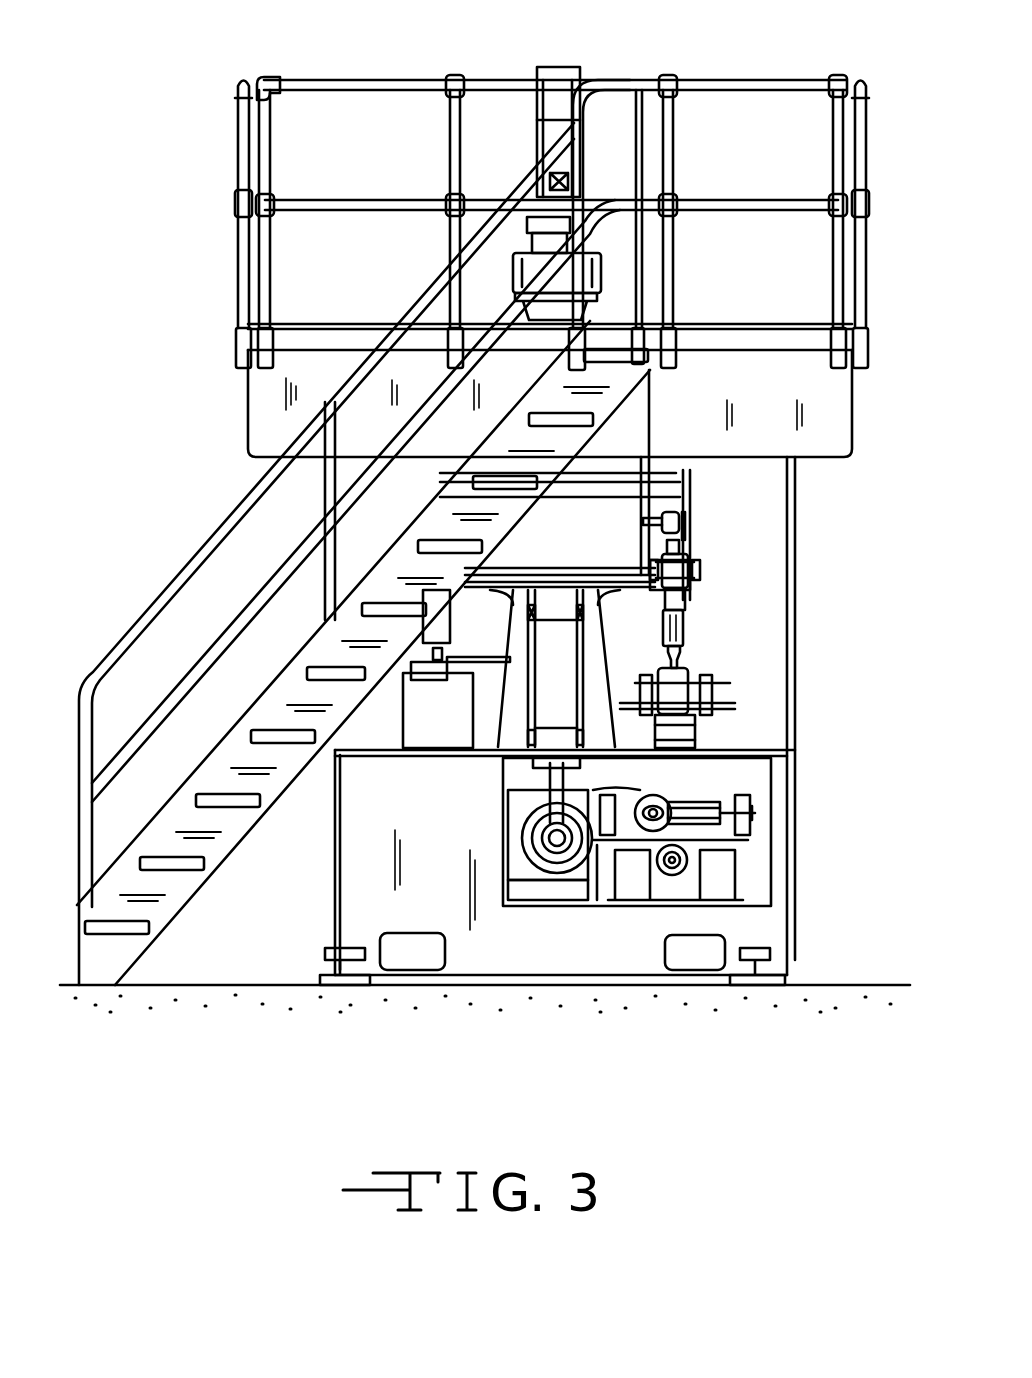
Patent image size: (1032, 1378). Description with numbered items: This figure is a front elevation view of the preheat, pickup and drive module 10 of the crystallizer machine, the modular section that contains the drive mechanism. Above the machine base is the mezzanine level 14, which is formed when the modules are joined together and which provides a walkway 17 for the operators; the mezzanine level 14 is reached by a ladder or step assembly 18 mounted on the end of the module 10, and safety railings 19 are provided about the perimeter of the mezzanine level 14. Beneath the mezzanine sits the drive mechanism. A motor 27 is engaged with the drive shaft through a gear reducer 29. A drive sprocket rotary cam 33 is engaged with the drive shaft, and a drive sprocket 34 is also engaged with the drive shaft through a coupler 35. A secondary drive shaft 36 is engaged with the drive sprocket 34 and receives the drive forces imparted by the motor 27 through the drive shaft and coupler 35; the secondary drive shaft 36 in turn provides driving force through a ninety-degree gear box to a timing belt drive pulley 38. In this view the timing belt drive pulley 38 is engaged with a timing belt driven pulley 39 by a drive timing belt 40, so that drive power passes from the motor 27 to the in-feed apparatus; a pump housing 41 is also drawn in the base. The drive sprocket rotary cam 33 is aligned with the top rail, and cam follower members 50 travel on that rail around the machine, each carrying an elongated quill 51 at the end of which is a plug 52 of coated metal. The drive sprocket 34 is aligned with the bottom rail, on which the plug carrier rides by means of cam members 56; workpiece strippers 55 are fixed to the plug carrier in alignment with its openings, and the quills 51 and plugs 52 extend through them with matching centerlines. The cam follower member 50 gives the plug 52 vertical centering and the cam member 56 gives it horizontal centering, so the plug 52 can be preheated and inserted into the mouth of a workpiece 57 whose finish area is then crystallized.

The preheat, pickup and drive module 10 is at (795, 913).
The mezzanine level 14 is at (830, 407).
The walkway 17 is at (752, 324).
The ladder or step assembly 18 is at (99, 968).
The safety railings 19 is at (865, 268).
The motor 27 is at (582, 73).
The gear reducer 29 is at (604, 267).
The drive sprocket rotary cam 33 is at (686, 485).
The drive sprocket 34 is at (621, 588).
The coupler 35 is at (682, 548).
The secondary drive shaft 36 is at (665, 732).
The timing belt drive pulley 38 is at (545, 858).
The timing belt driven pulley 39 is at (683, 876).
The drive timing belt 40 is at (655, 882).
The pump housing 41 is at (690, 862).
The cam follower member 50 is at (688, 537).
The quill 51 is at (688, 600).
The plug 52 is at (684, 658).
The workpiece stripper 55 is at (686, 632).
The cam member 56 is at (690, 576).
The workpiece 57 is at (690, 700).